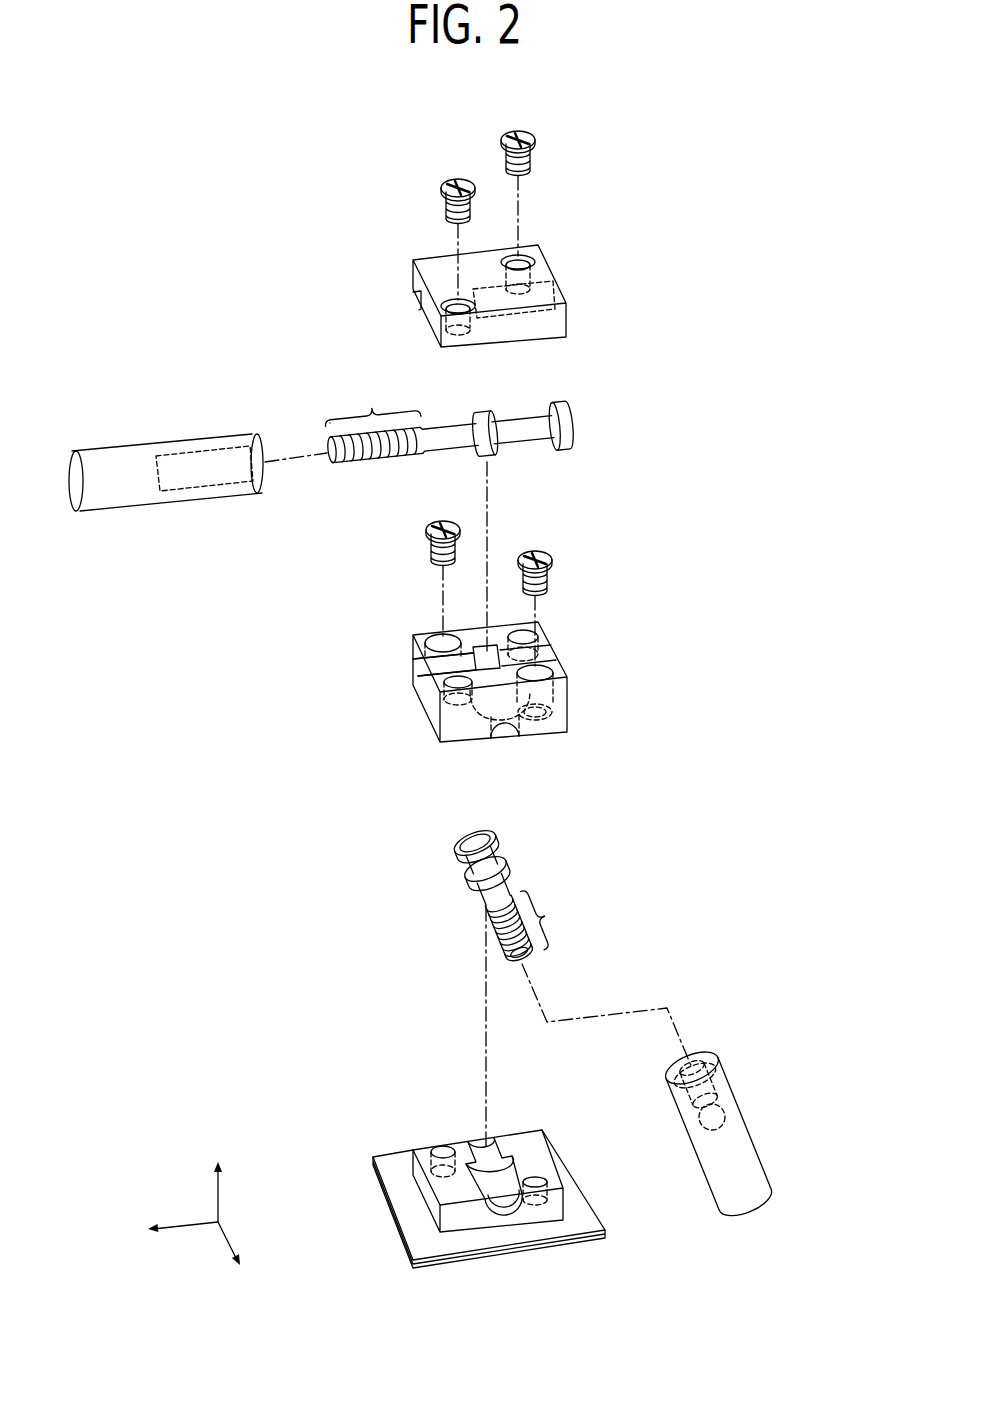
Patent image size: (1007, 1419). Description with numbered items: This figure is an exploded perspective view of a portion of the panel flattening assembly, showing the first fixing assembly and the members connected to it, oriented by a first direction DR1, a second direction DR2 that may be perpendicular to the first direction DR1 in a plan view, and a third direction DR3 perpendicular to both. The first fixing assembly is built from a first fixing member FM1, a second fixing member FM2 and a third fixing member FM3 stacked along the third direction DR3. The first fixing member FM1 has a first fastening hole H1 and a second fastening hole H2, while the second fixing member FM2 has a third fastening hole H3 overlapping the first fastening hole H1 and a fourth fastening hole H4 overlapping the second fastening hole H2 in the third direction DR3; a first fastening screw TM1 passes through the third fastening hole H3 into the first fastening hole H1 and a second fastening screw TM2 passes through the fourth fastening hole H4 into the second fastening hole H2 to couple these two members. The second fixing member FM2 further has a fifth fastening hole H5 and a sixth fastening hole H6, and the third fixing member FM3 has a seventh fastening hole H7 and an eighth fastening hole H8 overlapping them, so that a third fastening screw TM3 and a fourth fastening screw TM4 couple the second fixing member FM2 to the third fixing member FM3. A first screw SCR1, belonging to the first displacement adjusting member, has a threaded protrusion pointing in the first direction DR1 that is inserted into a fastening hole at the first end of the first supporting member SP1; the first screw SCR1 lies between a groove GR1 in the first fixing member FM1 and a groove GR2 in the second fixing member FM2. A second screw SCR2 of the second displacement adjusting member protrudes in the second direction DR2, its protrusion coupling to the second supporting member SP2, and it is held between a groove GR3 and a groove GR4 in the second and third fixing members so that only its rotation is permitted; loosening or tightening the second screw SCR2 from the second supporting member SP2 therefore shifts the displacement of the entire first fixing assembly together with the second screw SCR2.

The first fastening screw TM1 is at (427, 527).
The second fastening screw TM2 is at (551, 549).
The third fastening screw TM3 is at (442, 185).
The fourth fastening screw TM4 is at (542, 135).
The first fixing member FM1 is at (581, 1197).
The second fixing member FM2 is at (567, 700).
The third fixing member FM3 is at (563, 278).
The first fastening hole H1 is at (425, 1128).
The second fastening hole H2 is at (564, 1156).
The third fastening hole H3 is at (412, 628).
The fourth fastening hole H4 is at (571, 669).
The fifth fastening hole H5 is at (418, 701).
The sixth fastening hole H6 is at (557, 632).
The seventh fastening hole H7 is at (419, 296).
The eighth fastening hole H8 is at (555, 260).
The groove GR1 is at (504, 1221).
The groove GR2 is at (513, 763).
The groove GR3 is at (410, 671).
The groove GR4 is at (375, 315).
The first screw SCR1 is at (571, 985).
The second screw SCR2 is at (514, 515).
The first supporting member SP1 is at (743, 1135).
The second supporting member SP2 is at (133, 458).
The first direction DR1 is at (240, 1260).
The second direction DR2 is at (162, 1232).
The third direction DR3 is at (218, 1177).